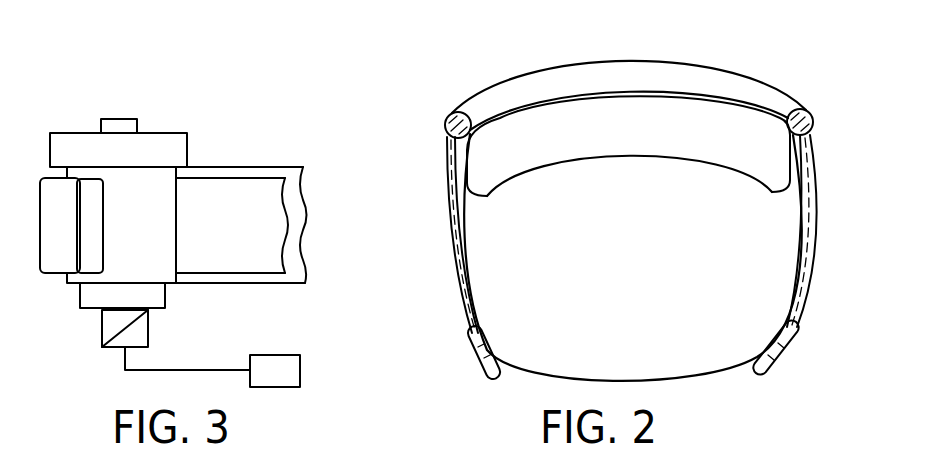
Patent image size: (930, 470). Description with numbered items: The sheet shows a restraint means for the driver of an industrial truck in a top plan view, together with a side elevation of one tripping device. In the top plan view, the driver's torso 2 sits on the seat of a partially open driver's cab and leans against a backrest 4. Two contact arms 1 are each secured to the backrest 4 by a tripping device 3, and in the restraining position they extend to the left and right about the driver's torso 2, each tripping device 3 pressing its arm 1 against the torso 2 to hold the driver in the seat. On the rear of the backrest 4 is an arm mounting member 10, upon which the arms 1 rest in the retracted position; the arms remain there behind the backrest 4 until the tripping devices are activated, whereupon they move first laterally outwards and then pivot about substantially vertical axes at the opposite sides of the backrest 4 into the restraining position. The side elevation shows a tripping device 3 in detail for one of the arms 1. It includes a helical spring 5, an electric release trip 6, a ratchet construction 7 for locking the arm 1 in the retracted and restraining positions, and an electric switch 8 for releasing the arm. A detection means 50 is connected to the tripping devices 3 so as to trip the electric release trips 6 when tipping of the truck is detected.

In FIG. 3, the contact arm 1 is at (267, 262).
In FIG. 2, the contact arm 1 is at (448, 263).
In FIG. 2, the torso 2 is at (728, 350).
In FIG. 2, the tripping device 3 is at (450, 113).
In FIG. 2, the backrest 4 is at (482, 157).
In FIG. 3, the helical spring 5 is at (157, 302).
In FIG. 3, the electric release trip 6 is at (102, 325).
In FIG. 3, the ratchet construction 7 is at (182, 148).
In FIG. 3, the electric switch 8 is at (118, 121).
In FIG. 2, the arm mounting member 10 is at (642, 73).
In FIG. 3, the detection means 50 is at (307, 372).